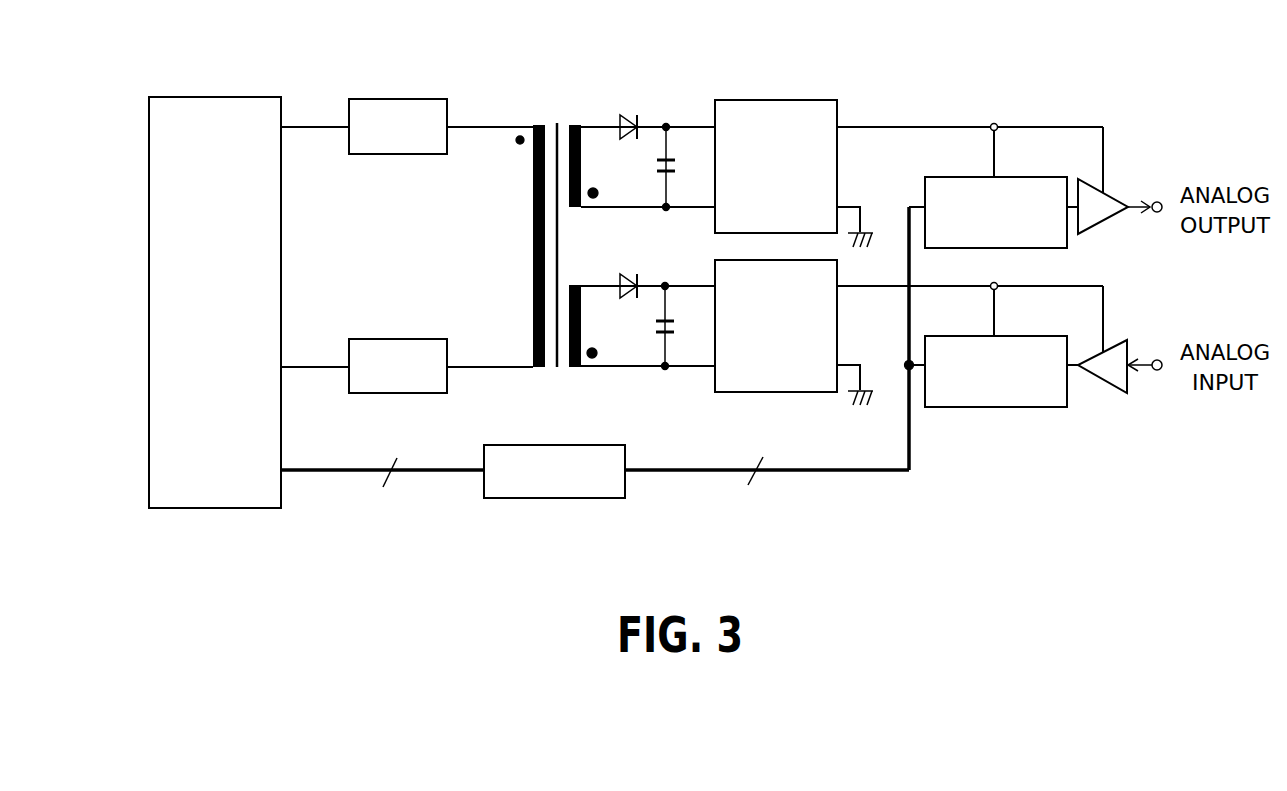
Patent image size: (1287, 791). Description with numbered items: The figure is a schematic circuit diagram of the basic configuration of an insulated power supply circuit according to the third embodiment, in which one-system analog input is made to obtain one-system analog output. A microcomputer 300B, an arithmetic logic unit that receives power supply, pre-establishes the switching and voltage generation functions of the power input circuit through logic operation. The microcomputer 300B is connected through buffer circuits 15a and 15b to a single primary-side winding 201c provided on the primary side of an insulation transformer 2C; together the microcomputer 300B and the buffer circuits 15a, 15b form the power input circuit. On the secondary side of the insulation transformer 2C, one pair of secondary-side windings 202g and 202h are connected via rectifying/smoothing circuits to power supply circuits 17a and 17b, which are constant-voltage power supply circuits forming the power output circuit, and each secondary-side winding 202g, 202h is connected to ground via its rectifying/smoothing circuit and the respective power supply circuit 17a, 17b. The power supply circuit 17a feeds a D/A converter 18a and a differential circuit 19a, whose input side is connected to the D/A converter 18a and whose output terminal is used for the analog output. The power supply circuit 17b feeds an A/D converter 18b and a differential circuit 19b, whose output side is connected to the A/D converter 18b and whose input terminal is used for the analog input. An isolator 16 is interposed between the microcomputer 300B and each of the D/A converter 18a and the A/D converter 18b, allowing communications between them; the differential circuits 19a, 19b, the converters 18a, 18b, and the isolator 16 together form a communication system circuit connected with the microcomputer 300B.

The microcomputer 300B is at (231, 97).
The buffer circuit 15a is at (400, 98).
The buffer circuit 15b is at (400, 338).
The insulation transformer 2C is at (541, 234).
The primary-side winding 201c is at (533, 340).
The secondary-side winding 202g is at (581, 208).
The secondary-side winding 202h is at (578, 368).
The power supply circuit 17a is at (782, 100).
The power supply circuit 17b is at (770, 394).
The D/A converter 18a is at (1024, 177).
The A/D converter 18b is at (1024, 336).
The differential circuit 19a is at (1111, 190).
The differential circuit 19b is at (1129, 351).
The isolator 16 is at (552, 500).